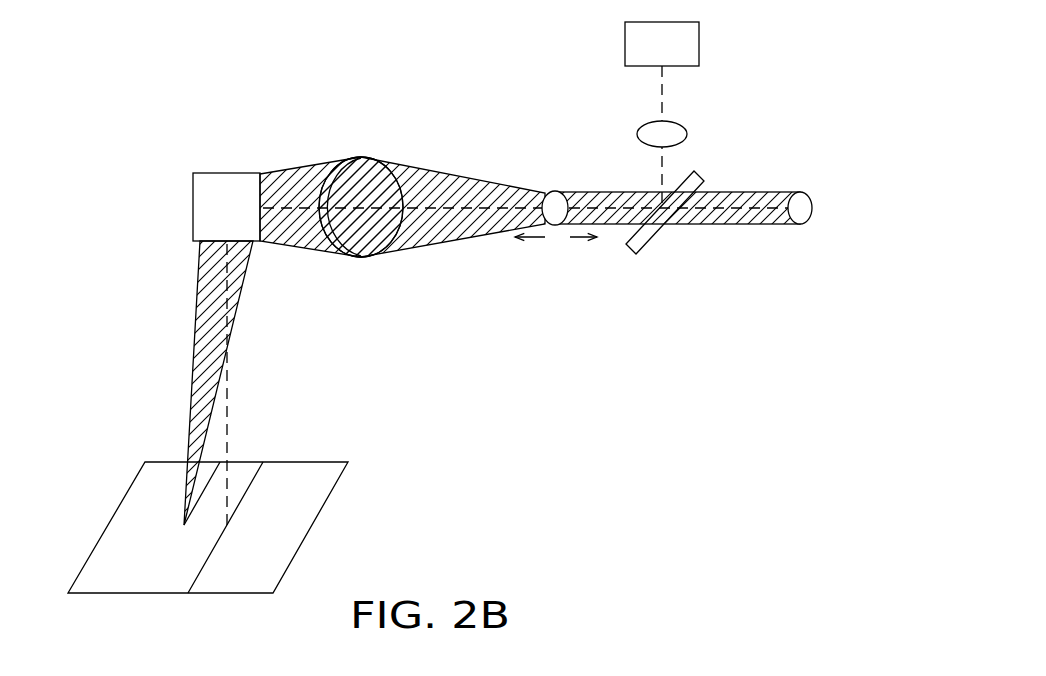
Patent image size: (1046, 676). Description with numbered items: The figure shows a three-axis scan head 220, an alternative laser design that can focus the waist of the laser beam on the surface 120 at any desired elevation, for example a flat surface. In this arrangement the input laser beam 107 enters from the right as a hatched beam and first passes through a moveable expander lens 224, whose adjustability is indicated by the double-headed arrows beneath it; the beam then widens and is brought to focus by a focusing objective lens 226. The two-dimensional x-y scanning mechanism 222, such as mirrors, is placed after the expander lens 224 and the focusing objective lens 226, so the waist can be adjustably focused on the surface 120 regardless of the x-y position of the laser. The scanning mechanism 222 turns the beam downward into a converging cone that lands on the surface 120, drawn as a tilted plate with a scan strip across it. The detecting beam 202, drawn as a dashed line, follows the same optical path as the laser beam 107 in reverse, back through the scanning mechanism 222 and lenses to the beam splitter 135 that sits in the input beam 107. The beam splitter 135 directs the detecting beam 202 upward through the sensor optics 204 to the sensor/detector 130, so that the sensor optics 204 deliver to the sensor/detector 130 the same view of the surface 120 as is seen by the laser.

The focusing objective lens 226 is at (347, 155).
The two-dimensional x-y scanning mechanism 222 is at (194, 163).
The sensor/detector 130 is at (623, 29).
The sensor optics 204 is at (636, 133).
The 3-axis scan head 220 is at (757, 82).
The beam splitter 135 is at (700, 177).
The laser beam 107 is at (763, 226).
The moveable expander lens 224 is at (557, 235).
The detecting beam 202 is at (230, 441).
The surface 120 is at (313, 522).